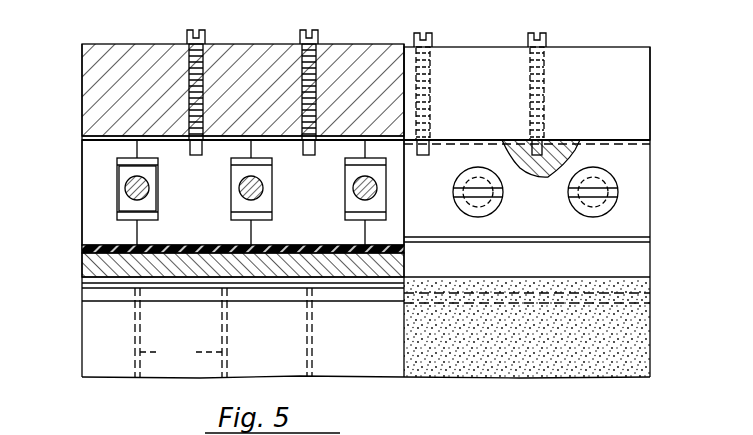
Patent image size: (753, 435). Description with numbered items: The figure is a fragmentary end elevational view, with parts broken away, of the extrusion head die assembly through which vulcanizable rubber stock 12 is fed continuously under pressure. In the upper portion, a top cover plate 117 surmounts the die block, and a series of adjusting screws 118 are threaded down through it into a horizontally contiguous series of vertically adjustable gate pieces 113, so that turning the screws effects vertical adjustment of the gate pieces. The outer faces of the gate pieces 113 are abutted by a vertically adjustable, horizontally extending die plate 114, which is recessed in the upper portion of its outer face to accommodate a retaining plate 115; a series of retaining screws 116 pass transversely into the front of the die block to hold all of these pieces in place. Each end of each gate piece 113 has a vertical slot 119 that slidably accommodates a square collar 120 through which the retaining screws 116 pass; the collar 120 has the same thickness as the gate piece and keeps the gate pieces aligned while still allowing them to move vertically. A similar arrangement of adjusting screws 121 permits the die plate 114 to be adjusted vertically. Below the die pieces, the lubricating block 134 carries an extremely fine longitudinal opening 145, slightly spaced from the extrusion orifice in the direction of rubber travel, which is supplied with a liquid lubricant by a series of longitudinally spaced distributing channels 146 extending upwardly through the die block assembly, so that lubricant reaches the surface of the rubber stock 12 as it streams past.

The vulcanizable rubber stock 12 is at (82, 249).
The gate pieces 113 is at (88, 148).
The die plate 114 is at (566, 140).
The retaining plate 115 is at (642, 155).
The retaining screws 116 is at (233, 190).
The top cover plate 117 is at (129, 46).
The adjusting screws 118 is at (197, 30).
The vertical slot 119 is at (117, 162).
The square collar 120 is at (117, 181).
The adjusting screws 121 is at (528, 40).
The lubricating block 134 is at (248, 290).
The longitudinal opening 145 is at (158, 290).
The distributing channels 146 is at (181, 351).